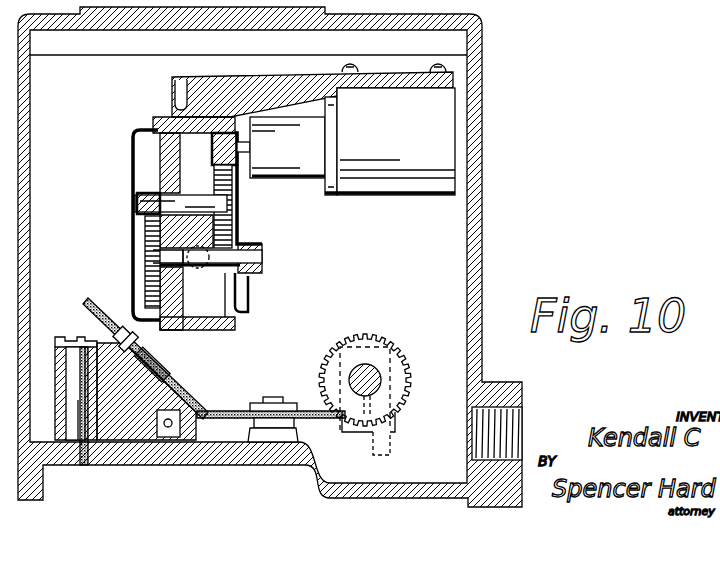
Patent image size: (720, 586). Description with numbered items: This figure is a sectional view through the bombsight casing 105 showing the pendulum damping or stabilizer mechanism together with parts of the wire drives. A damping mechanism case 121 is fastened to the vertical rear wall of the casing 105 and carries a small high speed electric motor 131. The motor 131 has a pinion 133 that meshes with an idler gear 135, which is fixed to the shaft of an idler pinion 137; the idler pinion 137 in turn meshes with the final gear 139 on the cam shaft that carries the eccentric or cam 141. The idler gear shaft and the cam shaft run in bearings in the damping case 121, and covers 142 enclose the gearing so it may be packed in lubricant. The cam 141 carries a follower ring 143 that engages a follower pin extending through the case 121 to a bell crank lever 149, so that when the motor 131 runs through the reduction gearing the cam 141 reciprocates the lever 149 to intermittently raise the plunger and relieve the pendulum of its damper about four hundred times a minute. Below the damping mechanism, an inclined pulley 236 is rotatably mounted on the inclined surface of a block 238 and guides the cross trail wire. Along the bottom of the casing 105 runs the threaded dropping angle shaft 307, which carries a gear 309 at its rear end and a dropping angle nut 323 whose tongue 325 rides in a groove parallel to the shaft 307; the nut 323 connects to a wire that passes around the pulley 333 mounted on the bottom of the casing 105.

The casing 105 is at (482, 228).
The damping mechanism case 121 is at (165, 117).
The electric motor 131 is at (368, 196).
The pinion 133 is at (214, 150).
The idler gear 135 is at (226, 221).
The idler pinion 137 is at (145, 195).
The final gear 139 is at (143, 240).
The eccentric or cam 141 is at (236, 272).
The covers 142 is at (133, 140).
The follower ring 143 is at (190, 268).
The bell crank lever 149 is at (180, 80).
The inclined pulley 236 is at (88, 302).
The block 238 is at (53, 347).
The threaded shaft 307 is at (352, 368).
The gear 309 is at (405, 357).
The dropping angle nut 323 is at (395, 418).
The tongue 325 is at (390, 437).
The pulley 333 is at (225, 410).